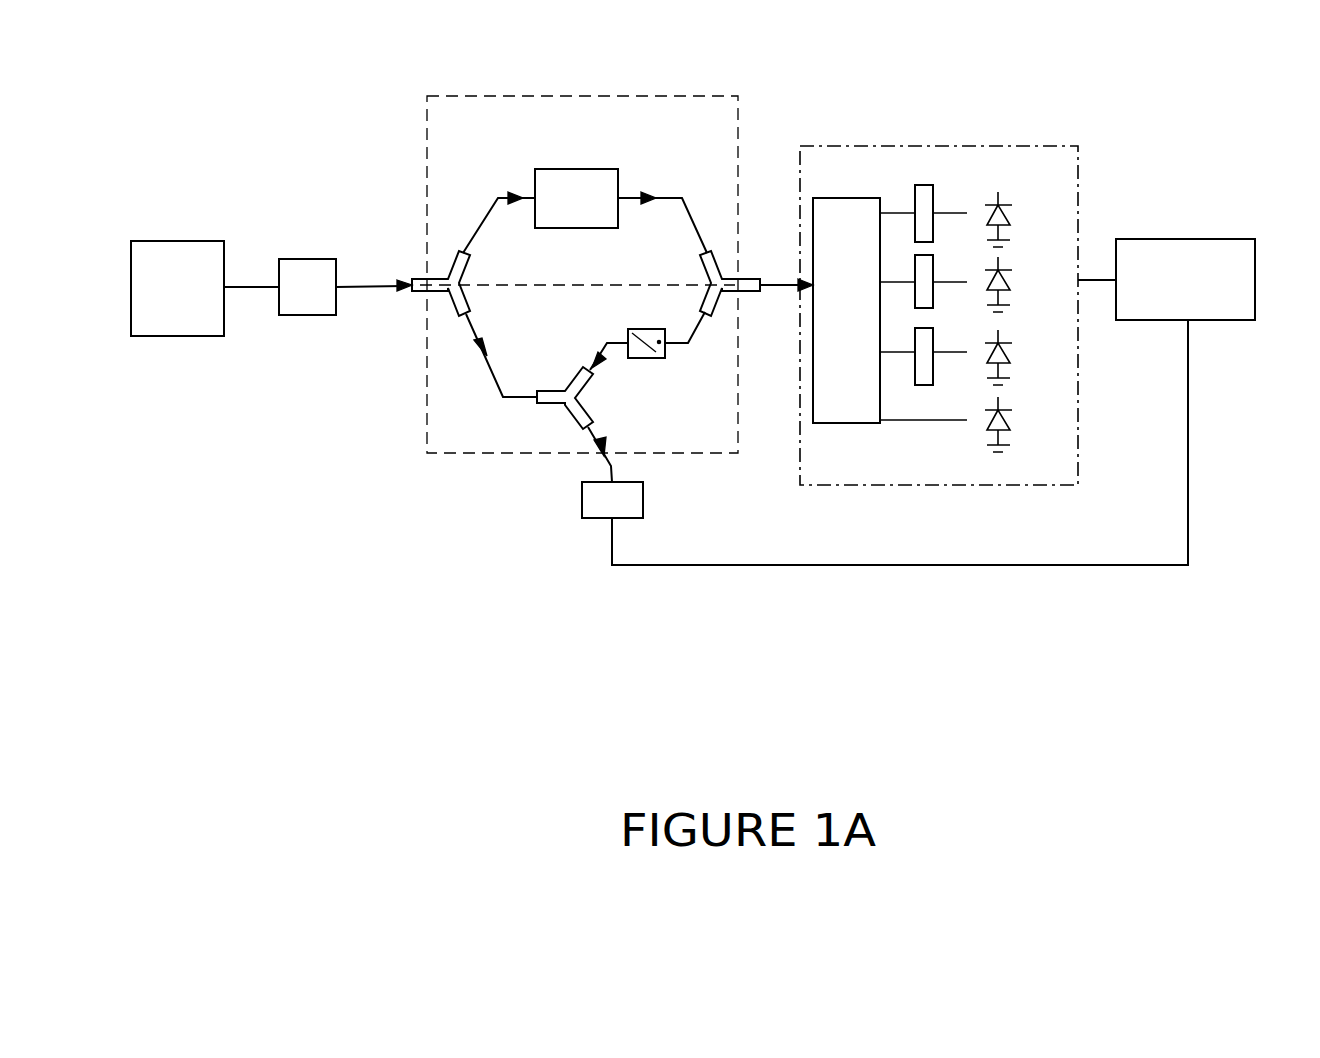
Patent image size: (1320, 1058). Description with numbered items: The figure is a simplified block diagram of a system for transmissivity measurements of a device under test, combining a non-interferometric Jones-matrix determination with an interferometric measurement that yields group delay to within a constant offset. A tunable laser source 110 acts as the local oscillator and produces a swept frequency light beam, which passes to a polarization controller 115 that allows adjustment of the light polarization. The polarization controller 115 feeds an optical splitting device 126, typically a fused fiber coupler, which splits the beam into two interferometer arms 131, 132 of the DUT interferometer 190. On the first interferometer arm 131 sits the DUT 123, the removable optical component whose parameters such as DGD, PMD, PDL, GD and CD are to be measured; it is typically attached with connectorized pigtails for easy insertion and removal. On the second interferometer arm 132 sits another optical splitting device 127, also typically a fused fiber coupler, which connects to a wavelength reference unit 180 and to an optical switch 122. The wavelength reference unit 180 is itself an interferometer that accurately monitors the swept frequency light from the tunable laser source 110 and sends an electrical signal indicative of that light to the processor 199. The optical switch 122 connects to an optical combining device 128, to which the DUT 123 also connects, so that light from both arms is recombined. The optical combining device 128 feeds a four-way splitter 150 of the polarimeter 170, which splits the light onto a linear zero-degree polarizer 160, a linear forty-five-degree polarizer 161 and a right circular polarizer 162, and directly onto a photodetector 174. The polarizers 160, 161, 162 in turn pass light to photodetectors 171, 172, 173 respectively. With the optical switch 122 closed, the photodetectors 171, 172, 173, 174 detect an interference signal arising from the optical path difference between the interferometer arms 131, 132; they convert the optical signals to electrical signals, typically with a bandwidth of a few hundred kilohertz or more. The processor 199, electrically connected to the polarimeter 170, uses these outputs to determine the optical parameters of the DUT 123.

The tunable laser source 110 is at (179, 250).
The polarization controller 115 is at (299, 264).
The DUT interferometer 190 is at (645, 78).
The optical splitting device 126 is at (462, 272).
The interferometer arm 131 is at (724, 132).
The device under test 123 is at (565, 178).
The optical combining device 128 is at (712, 265).
The interferometer arm 132 is at (730, 443).
The optical switch 122 is at (637, 334).
The optical splitting device 127 is at (562, 392).
The wavelength reference unit 180 is at (582, 511).
The polarimeter 170 is at (948, 124).
The four-way splitter 150 is at (835, 208).
The linear 0° polarizer 160 is at (925, 195).
The linear 45° polarizer 161 is at (925, 272).
The right circular polarizer 162 is at (925, 343).
The photodetector 171 is at (1005, 217).
The photodetector 172 is at (1005, 284).
The photodetector 173 is at (1007, 353).
The photodetector 174 is at (1007, 420).
The processor 199 is at (1168, 246).